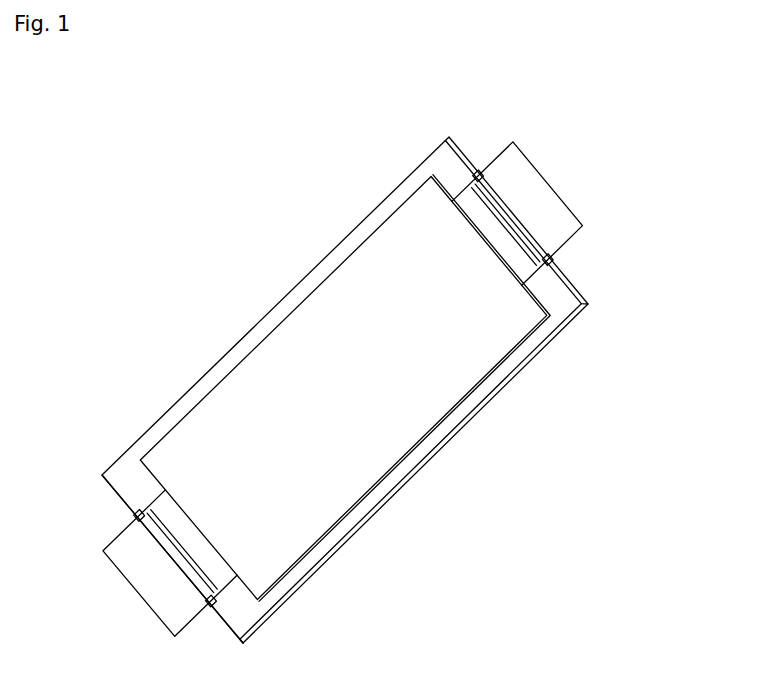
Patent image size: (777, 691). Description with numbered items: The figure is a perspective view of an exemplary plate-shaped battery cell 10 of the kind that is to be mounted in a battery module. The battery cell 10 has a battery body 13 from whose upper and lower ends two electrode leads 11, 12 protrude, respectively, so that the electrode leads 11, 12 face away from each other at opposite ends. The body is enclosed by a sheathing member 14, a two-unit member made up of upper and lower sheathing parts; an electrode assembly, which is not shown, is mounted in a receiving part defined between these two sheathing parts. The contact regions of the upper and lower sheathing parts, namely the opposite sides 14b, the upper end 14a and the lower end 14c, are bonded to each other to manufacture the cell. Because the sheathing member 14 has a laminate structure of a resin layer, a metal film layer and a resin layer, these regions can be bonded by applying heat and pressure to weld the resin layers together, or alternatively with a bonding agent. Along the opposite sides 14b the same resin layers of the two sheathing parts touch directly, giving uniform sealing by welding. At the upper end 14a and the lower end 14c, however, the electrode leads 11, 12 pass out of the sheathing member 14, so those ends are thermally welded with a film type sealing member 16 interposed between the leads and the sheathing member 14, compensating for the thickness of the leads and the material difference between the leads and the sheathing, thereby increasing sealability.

The plate-shaped battery cell 10 is at (151, 163).
The electrode lead 11 is at (153, 594).
The electrode lead 12 is at (552, 197).
The battery body 13 is at (298, 332).
The sheathing member 14 is at (433, 143).
The upper end 14a is at (130, 472).
The opposite sides 14b is at (436, 445).
The lower end 14c is at (572, 305).
The film type sealing member 16 is at (481, 170).